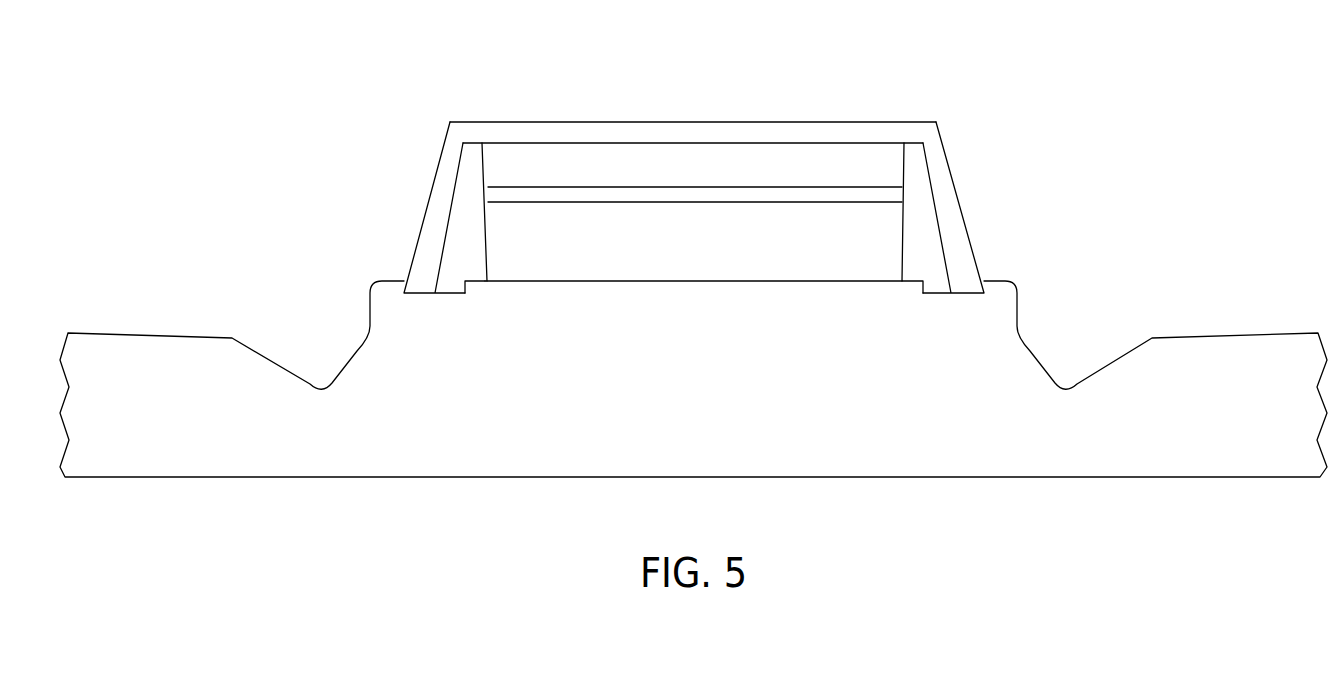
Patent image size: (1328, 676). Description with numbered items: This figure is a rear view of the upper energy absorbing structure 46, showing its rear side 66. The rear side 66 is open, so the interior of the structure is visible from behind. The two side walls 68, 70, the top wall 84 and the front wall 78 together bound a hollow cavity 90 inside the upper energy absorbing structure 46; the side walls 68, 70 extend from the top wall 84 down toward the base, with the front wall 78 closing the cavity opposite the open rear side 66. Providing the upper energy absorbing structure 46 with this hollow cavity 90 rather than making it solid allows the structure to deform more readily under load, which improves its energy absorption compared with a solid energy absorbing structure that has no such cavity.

The upper energy absorbing structure 46 is at (246, 112).
The side wall 70 is at (428, 200).
The top wall 84 is at (700, 122).
The side wall 68 is at (952, 208).
The rear side 66 is at (915, 225).
The hollow cavity 90 is at (545, 170).
The front wall 78 is at (648, 267).